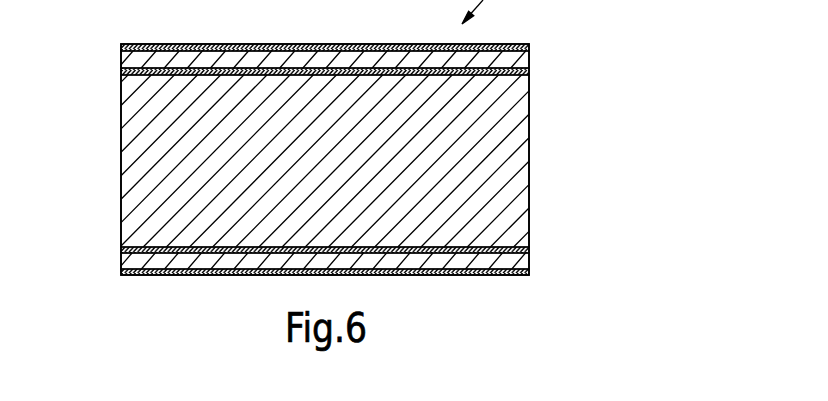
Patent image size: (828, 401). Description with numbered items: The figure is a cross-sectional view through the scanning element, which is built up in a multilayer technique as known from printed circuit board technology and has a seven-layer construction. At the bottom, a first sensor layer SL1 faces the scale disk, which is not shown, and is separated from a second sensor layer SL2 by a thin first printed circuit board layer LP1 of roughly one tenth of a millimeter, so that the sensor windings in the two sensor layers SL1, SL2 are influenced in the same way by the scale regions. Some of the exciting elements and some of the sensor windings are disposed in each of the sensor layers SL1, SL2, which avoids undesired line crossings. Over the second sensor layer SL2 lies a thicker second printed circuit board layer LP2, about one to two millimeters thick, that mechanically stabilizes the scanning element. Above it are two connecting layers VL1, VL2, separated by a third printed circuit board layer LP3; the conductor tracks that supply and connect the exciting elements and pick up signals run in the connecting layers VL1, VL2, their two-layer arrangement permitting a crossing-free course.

The first printed circuit board layer LP1 is at (133, 263).
The second printed circuit board layer LP2 is at (133, 155).
The third printed circuit board layer LP3 is at (133, 63).
The first connecting layer VL1 is at (531, 86).
The second connecting layer VL2 is at (528, 44).
The first sensor layer SL1 is at (529, 275).
The second sensor layer SL2 is at (530, 239).